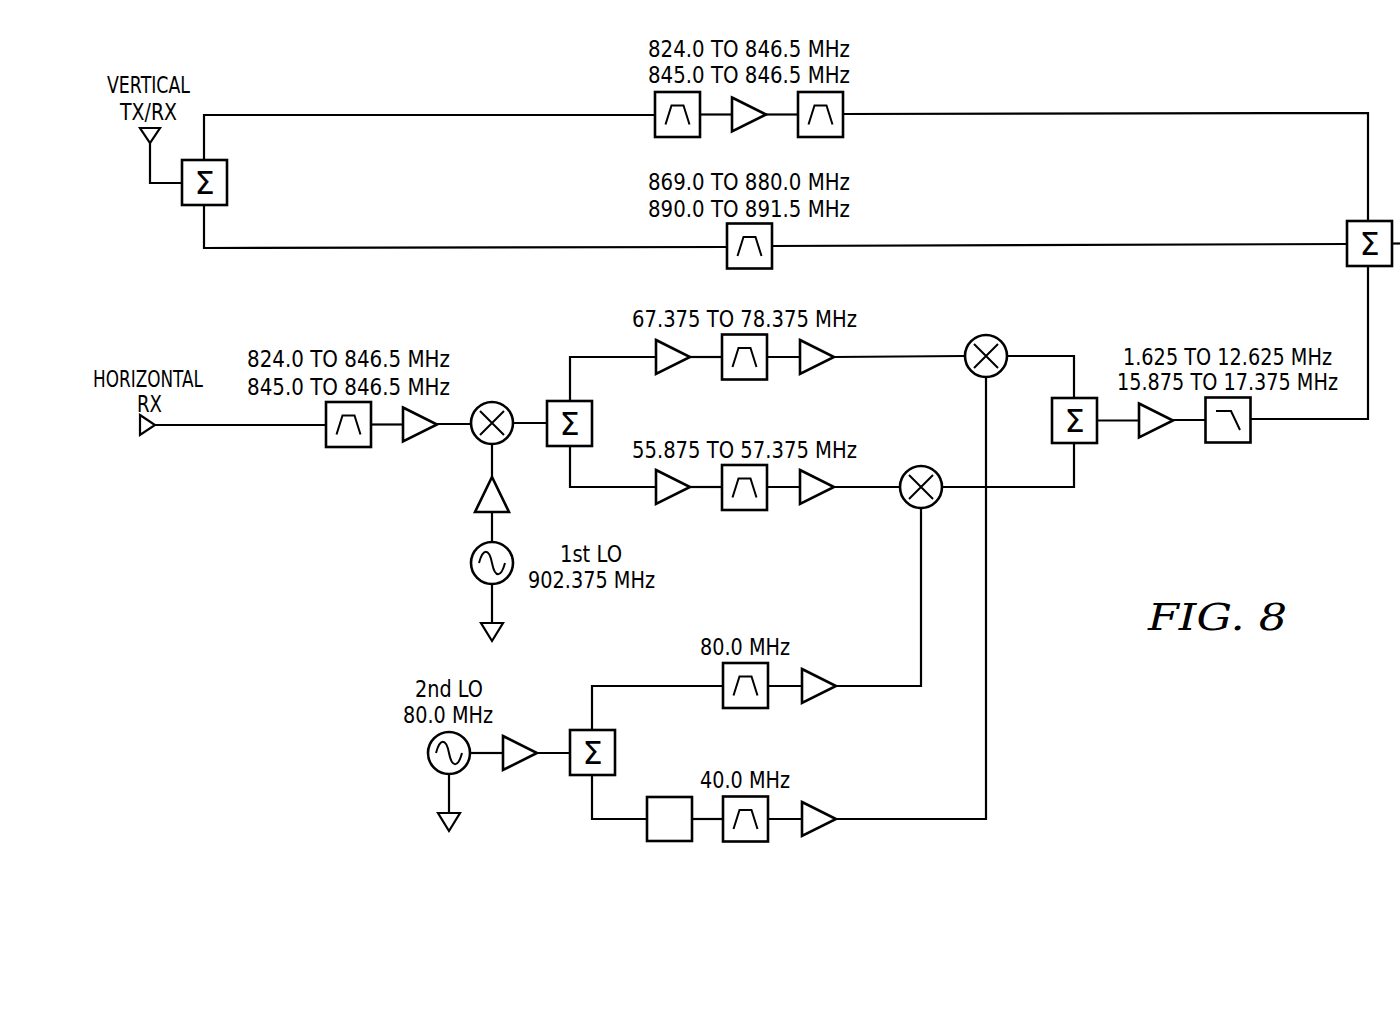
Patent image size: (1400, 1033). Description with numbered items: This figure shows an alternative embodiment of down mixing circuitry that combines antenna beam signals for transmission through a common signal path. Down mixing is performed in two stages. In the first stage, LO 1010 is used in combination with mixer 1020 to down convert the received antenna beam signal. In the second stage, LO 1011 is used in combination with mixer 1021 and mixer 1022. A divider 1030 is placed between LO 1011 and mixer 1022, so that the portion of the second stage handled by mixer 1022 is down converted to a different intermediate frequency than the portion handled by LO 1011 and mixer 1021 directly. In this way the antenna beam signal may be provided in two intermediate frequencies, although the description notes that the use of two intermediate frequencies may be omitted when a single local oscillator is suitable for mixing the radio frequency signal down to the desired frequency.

The LO 1010 is at (470, 560).
The LO 1011 is at (427, 750).
The mixer 1020 is at (497, 402).
The mixer 1021 is at (928, 463).
The mixer 1022 is at (993, 333).
The divider 1030 is at (670, 842).